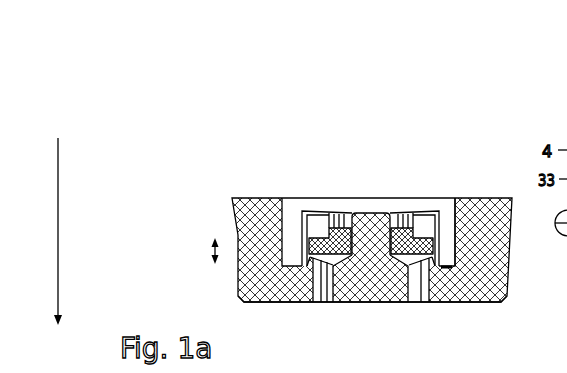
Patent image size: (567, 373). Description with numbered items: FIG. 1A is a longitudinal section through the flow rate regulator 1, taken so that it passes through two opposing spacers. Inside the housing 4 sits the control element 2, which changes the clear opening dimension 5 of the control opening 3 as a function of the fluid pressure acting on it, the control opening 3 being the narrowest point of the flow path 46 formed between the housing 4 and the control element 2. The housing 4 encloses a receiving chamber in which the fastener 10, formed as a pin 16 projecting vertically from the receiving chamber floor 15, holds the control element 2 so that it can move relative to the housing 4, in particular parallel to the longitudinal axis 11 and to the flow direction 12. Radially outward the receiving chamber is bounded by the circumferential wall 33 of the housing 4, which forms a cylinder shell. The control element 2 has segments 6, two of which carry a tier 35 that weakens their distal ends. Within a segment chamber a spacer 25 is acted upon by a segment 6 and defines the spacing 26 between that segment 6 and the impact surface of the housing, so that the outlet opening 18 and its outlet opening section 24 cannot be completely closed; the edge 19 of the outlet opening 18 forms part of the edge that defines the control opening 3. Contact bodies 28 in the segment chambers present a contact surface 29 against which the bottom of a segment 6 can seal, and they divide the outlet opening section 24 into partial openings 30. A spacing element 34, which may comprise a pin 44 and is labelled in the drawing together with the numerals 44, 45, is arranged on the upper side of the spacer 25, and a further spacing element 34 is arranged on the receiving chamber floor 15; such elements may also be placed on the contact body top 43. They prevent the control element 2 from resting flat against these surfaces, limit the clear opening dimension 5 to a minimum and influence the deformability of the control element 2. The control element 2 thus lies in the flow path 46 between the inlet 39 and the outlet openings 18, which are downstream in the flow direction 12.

The flow rate regulator 1 is at (457, 55).
The control element 2 is at (340, 211).
The control opening 3 is at (315, 250).
The clear opening dimension 5 is at (284, 255).
The housing 4 is at (243, 207).
The segment 6 is at (335, 211).
The fastener 10 is at (380, 184).
The pin 16 is at (373, 211).
The receiving chamber floor 15 is at (396, 211).
The tier 35 is at (417, 211).
The inlet 39 is at (457, 175).
The flow path 46 is at (288, 214).
The spacing element 34 is at (327, 169).
The pin 44 is at (327, 169).
The seal foot 45 is at (371, 322).
The contact body 28 is at (334, 297).
The contact surface 29 is at (334, 297).
The contact body top 43 is at (324, 262).
The outlet opening 18 is at (416, 304).
The outlet opening section 24 is at (416, 304).
The partial opening 30 is at (415, 285).
The edge 19 is at (443, 266).
The spacer 25 is at (283, 285).
The circumferential wall 33 is at (245, 295).
The spacing 26 is at (203, 251).
The longitudinal axis 11 is at (60, 222).
The flow direction 12 is at (60, 222).